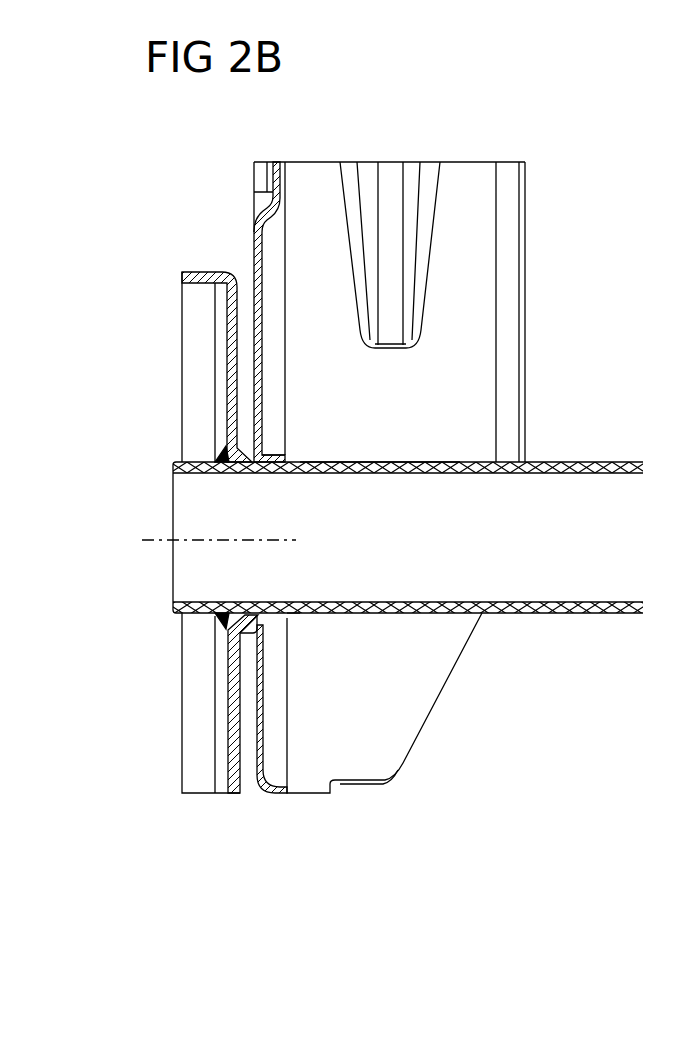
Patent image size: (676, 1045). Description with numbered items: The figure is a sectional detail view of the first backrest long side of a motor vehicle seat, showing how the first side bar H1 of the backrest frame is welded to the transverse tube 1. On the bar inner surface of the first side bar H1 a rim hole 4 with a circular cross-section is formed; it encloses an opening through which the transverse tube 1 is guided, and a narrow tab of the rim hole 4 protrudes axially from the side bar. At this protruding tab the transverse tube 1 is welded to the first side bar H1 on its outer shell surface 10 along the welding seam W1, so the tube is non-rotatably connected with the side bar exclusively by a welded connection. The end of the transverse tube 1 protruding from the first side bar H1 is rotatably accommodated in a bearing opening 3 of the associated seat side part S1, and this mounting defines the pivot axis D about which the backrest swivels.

The transverse tube 1 is at (551, 458).
The bearing opening 3 is at (220, 627).
The rim hole 4 is at (277, 456).
The outer shell surface 10 is at (389, 462).
The pivot axis D is at (206, 542).
The first side bar H1 is at (298, 195).
The seat side part S1 is at (173, 263).
The welding seam W1 is at (294, 618).